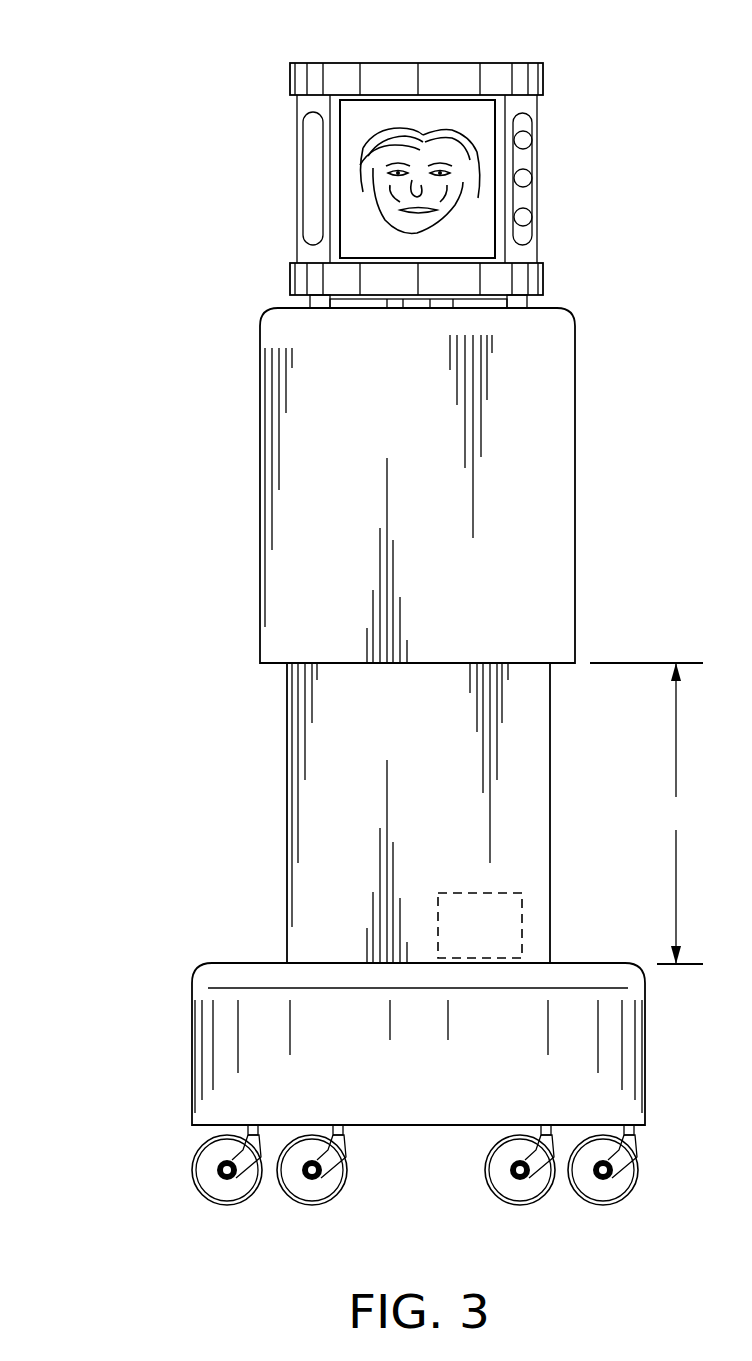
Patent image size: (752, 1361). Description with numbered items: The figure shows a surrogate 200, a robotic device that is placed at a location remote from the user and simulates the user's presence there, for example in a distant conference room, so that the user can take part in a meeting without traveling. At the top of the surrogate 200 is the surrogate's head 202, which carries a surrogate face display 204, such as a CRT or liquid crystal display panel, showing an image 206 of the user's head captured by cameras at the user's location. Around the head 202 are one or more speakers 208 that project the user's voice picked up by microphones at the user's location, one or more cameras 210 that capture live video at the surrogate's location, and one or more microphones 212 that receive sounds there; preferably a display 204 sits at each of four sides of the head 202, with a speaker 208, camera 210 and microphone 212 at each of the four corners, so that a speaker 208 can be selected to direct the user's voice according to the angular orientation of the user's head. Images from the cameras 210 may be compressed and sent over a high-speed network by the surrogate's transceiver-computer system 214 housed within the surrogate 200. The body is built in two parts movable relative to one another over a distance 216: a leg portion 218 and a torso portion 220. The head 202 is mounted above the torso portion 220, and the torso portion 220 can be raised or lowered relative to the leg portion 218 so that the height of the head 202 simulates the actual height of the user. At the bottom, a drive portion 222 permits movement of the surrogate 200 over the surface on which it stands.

The surrogate 200 is at (132, 559).
The surrogate's head 202 is at (395, 63).
The surrogate face display 204 is at (365, 241).
The image of the user's head 206 is at (383, 215).
The speaker 208 is at (531, 140).
The camera 210 is at (532, 185).
The microphone 212 is at (532, 232).
The surrogate's transceiver-computer system 214 is at (501, 939).
The distance 216 is at (646, 813).
The leg portion 218 is at (287, 850).
The torso portion 220 is at (258, 475).
The drive portion 222 is at (192, 1080).